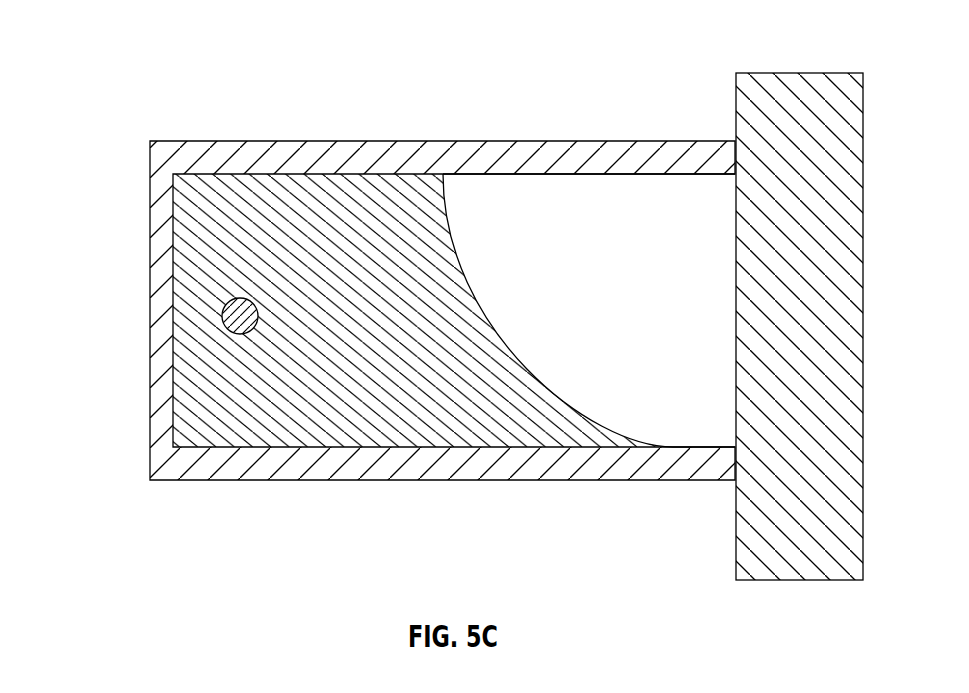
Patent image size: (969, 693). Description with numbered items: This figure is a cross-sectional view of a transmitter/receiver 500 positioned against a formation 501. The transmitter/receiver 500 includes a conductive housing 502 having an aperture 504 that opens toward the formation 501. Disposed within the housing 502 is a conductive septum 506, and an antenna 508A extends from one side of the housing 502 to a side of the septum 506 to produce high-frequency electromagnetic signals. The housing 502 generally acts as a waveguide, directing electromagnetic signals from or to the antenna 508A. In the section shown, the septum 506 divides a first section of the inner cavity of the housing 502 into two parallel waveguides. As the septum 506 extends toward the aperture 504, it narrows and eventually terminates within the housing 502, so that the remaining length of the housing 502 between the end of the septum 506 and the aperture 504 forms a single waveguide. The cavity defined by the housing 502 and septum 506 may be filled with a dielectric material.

The transmitter/receiver 500 is at (460, 314).
The formation 501 is at (819, 337).
The conductive housing 502 is at (225, 148).
The aperture 504 is at (735, 325).
The conductive septum 506 is at (353, 217).
The antenna 508A is at (222, 315).